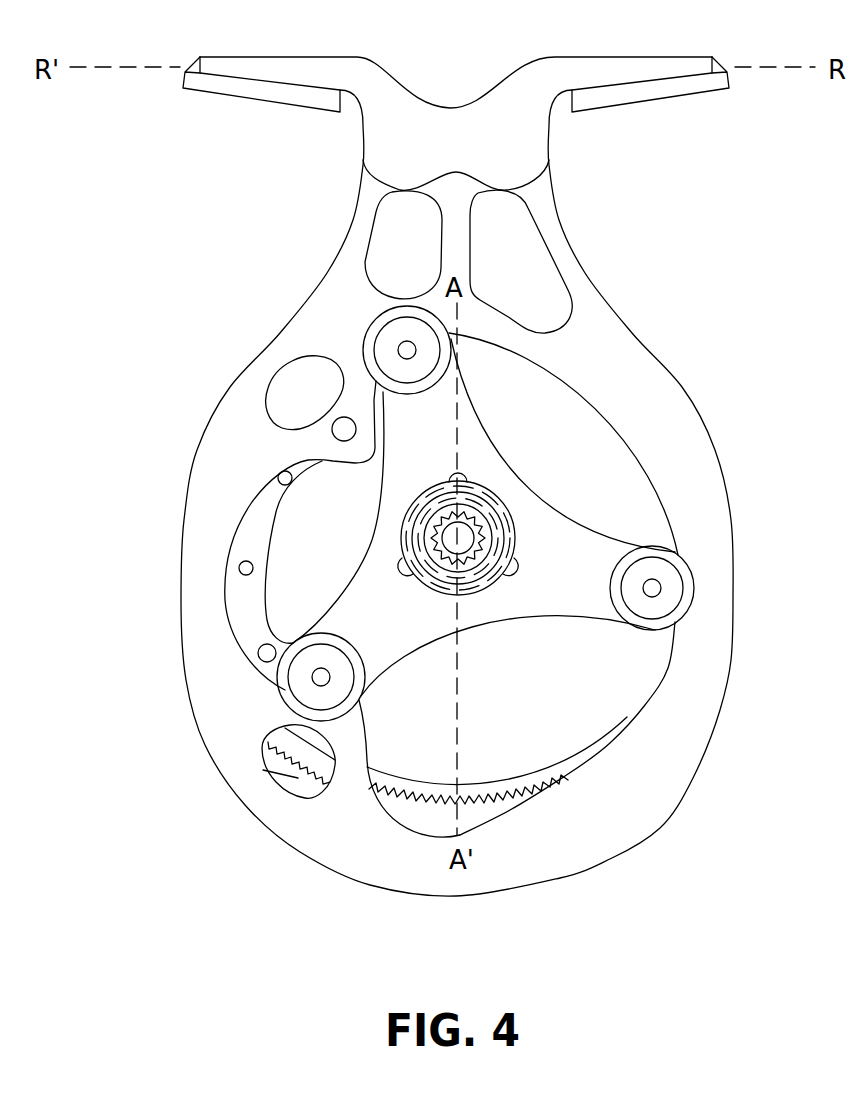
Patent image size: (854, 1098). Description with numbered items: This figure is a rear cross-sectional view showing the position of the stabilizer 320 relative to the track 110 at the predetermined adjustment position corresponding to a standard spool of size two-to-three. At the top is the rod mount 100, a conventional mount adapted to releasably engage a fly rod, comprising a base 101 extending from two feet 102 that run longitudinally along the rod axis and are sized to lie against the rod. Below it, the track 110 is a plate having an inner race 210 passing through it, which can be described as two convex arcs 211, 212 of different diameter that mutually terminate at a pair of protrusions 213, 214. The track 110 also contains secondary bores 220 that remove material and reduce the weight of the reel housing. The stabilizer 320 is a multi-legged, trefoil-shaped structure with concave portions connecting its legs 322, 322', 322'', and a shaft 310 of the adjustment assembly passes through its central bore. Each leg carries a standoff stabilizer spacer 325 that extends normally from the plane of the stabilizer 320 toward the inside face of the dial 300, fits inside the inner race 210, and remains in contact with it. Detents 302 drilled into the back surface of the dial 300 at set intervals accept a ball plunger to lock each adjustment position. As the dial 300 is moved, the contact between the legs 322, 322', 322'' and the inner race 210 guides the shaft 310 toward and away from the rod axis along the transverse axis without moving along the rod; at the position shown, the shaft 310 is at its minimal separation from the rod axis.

The rod mount 100 is at (457, 455).
The base 101 is at (520, 155).
The feet 102 is at (282, 67).
The track 110 is at (640, 798).
The inner race 210 is at (396, 585).
The convex arc 211 is at (240, 513).
The convex arc 212 is at (660, 660).
The protrusion 213 is at (363, 704).
The protrusion 214 is at (355, 468).
The secondary bores 220 is at (433, 250).
The dial 300 is at (205, 581).
The detents 302 is at (239, 567).
The shaft 310 is at (458, 545).
The stabilizer 320 is at (468, 492).
The leg 322 is at (245, 685).
The leg 322' is at (347, 320).
The leg 322'' is at (710, 595).
The stabilizer spacer 325 is at (411, 370).